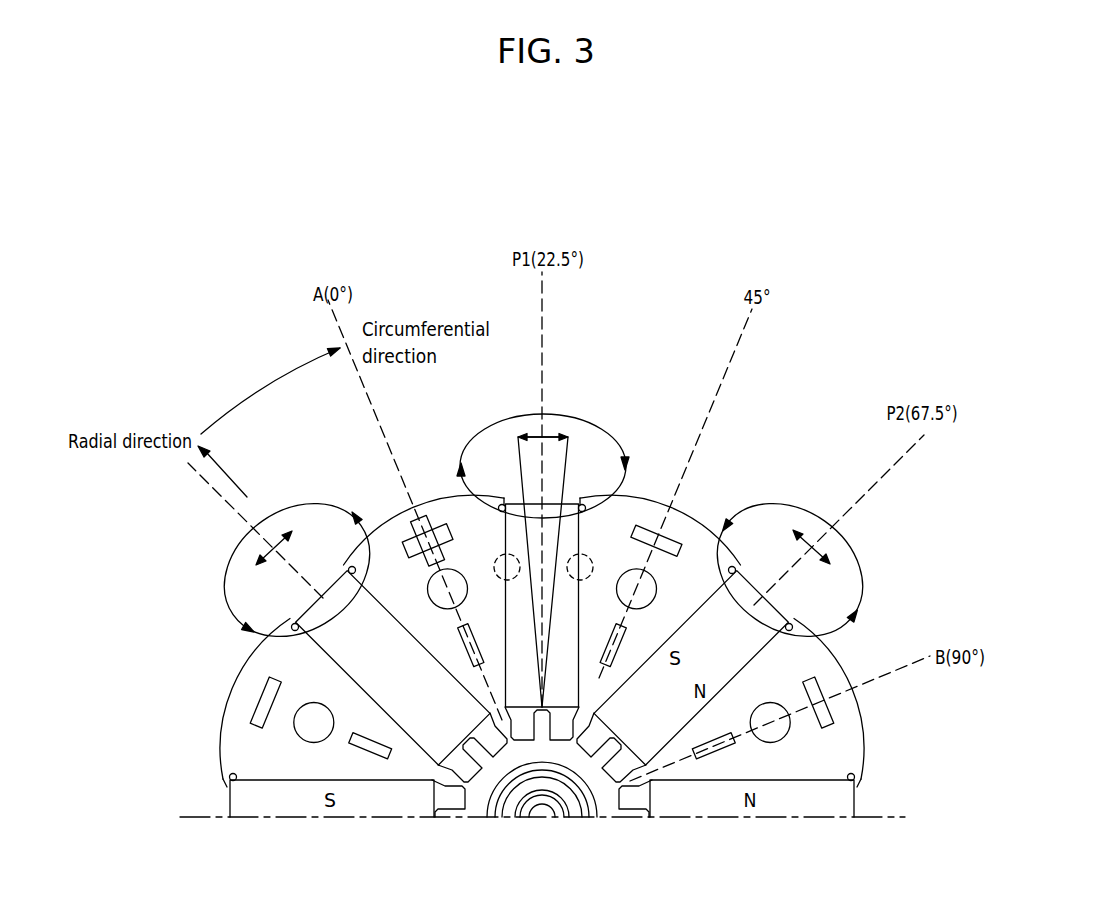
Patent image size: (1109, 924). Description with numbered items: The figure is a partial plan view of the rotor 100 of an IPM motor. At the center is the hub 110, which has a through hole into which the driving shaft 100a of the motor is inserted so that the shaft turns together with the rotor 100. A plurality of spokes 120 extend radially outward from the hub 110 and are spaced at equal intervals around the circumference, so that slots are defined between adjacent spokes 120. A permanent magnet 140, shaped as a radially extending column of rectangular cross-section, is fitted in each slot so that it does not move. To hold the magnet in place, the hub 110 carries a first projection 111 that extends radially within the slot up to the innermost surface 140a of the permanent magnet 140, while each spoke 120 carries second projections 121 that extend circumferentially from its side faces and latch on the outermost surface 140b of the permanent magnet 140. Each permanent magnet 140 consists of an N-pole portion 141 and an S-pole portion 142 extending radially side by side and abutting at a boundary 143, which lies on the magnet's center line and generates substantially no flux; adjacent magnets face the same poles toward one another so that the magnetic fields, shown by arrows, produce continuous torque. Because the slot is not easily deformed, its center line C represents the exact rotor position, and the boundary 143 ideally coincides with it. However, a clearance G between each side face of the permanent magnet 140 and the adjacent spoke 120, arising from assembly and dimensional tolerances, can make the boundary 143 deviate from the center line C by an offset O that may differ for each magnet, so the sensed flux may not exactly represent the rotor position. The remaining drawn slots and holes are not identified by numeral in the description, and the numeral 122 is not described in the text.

The rotor 100 is at (275, 835).
The driving shaft 100a is at (541, 820).
The hub 110 is at (610, 803).
The first projection 111 is at (622, 745).
The spoke 120 is at (645, 580).
The second projection 121 is at (863, 780).
The slot 122 is at (678, 524).
The permanent magnet 140 is at (597, 508).
The innermost surface 140a is at (648, 775).
The outermost surface 140b is at (780, 555).
The N-pole portion 141 is at (341, 574).
The S-pole portion 142 is at (312, 603).
The boundary 143 is at (330, 588).
The clearance G is at (582, 580).
The center line C is at (543, 544).
The offset O is at (547, 437).